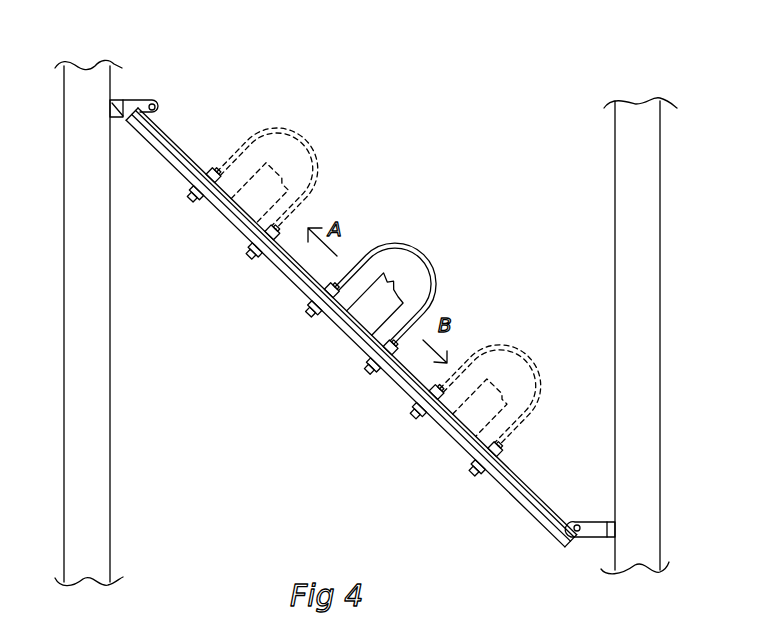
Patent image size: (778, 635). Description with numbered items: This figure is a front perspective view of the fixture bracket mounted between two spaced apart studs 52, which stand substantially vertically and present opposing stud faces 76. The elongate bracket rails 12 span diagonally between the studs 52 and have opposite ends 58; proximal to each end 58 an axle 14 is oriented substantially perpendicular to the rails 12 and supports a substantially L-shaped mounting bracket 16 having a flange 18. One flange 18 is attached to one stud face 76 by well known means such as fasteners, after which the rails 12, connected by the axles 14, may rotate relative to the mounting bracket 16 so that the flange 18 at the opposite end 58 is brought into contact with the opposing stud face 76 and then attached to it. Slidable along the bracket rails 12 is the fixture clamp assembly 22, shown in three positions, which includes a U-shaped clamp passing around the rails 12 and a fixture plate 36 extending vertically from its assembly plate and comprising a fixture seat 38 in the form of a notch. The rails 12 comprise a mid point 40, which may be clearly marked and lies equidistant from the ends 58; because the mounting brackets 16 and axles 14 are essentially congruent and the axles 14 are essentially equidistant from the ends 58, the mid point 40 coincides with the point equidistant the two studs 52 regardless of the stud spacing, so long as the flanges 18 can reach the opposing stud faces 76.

The bracket rails 12 is at (285, 267).
The axles 14 is at (156, 111).
The mounting brackets 16 is at (143, 100).
The mounting bracket flanges 18 is at (122, 100).
The fixture clamp assembly 22 is at (341, 114).
The fixture plate 36 is at (436, 278).
The fixture seat 38 is at (384, 275).
The mid point 40 is at (350, 332).
The studs 52 is at (92, 65).
The ends 58 is at (141, 121).
The stud faces 76 is at (110, 383).